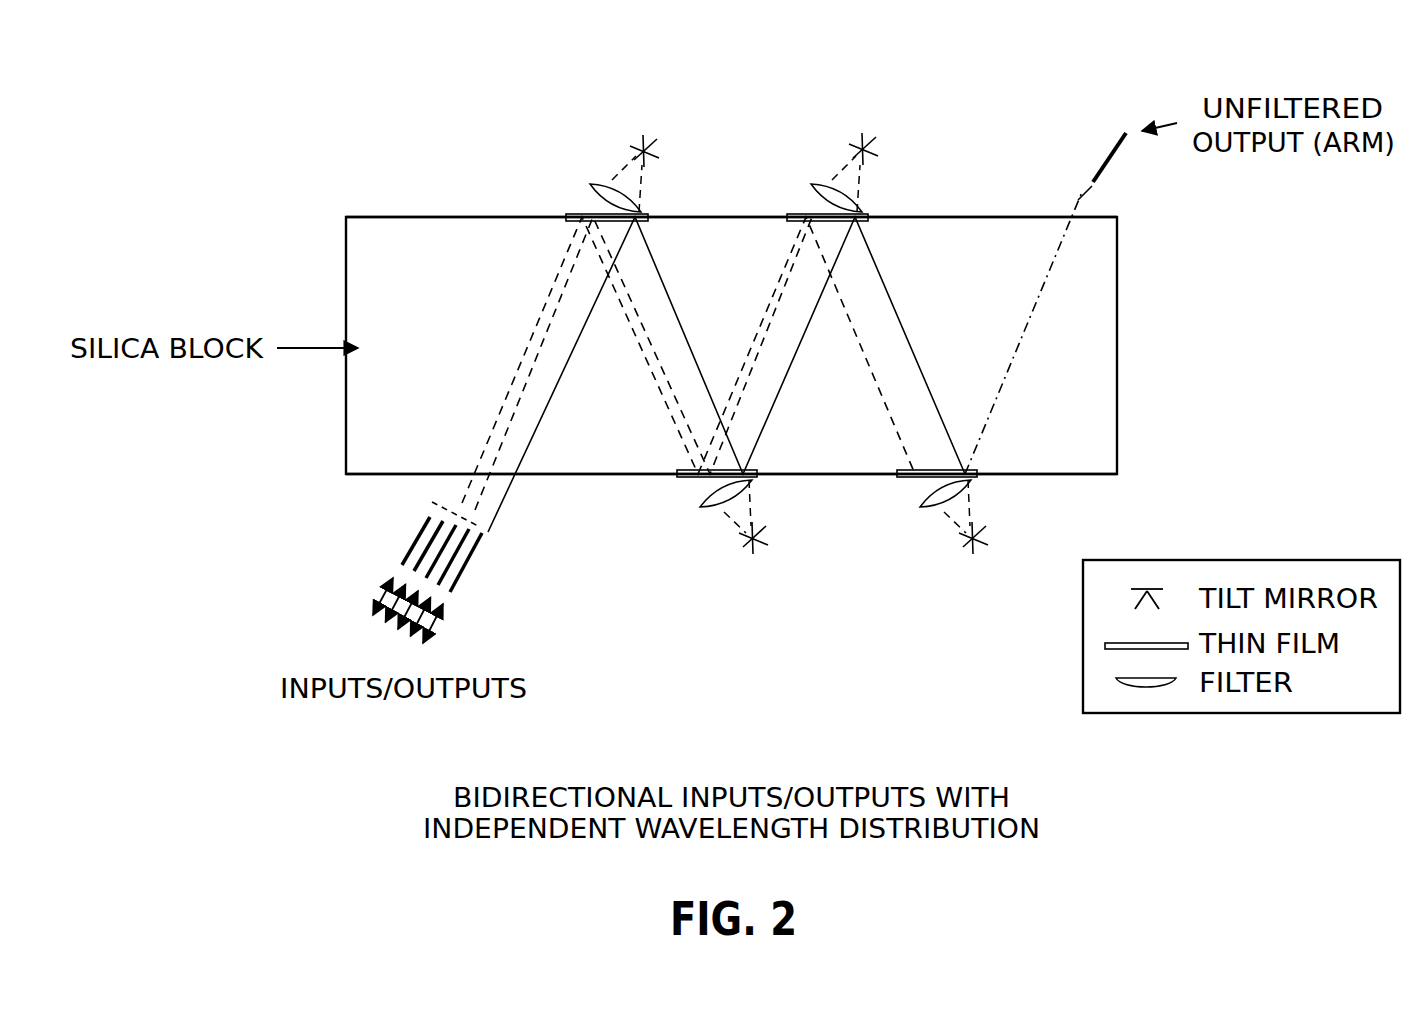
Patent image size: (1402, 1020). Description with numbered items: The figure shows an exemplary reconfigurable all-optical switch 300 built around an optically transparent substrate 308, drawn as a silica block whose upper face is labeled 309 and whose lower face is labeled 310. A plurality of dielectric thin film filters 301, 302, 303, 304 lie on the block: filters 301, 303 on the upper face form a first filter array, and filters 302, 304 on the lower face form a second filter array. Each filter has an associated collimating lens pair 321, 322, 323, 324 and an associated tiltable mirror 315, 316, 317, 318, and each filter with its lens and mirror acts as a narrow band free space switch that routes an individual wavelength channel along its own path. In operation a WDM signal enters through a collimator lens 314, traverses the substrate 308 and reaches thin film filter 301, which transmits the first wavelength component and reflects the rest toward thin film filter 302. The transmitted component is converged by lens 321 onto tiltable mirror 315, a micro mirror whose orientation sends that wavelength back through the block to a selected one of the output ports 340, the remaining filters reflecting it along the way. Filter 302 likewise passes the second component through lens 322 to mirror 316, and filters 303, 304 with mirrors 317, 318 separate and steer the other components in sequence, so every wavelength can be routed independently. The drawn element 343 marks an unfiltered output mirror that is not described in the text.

The reconfigurable optical switch 300 is at (227, 118).
The thin film filter 301 is at (575, 215).
The thin film filter 302 is at (683, 479).
The thin film filter 303 is at (795, 215).
The thin film filter 304 is at (903, 479).
The optically transparent substrate 308 is at (358, 410).
The top surface of silica block 309 is at (406, 215).
The bottom surface of silica block 310 is at (557, 478).
The collimator lens 314 is at (517, 560).
The tiltable mirror 315 is at (648, 151).
The tiltable mirror 316 is at (758, 540).
The tiltable mirror 317 is at (868, 150).
The tiltable mirror 318 is at (978, 540).
The collimating lens pair 321 is at (597, 187).
The collimating lens pair 322 is at (705, 510).
The collimating lens pair 323 is at (817, 186).
The collimating lens pair 324 is at (925, 510).
The output ports 340 is at (498, 607).
The unfiltered output mirror (ARM) 343 is at (1108, 168).